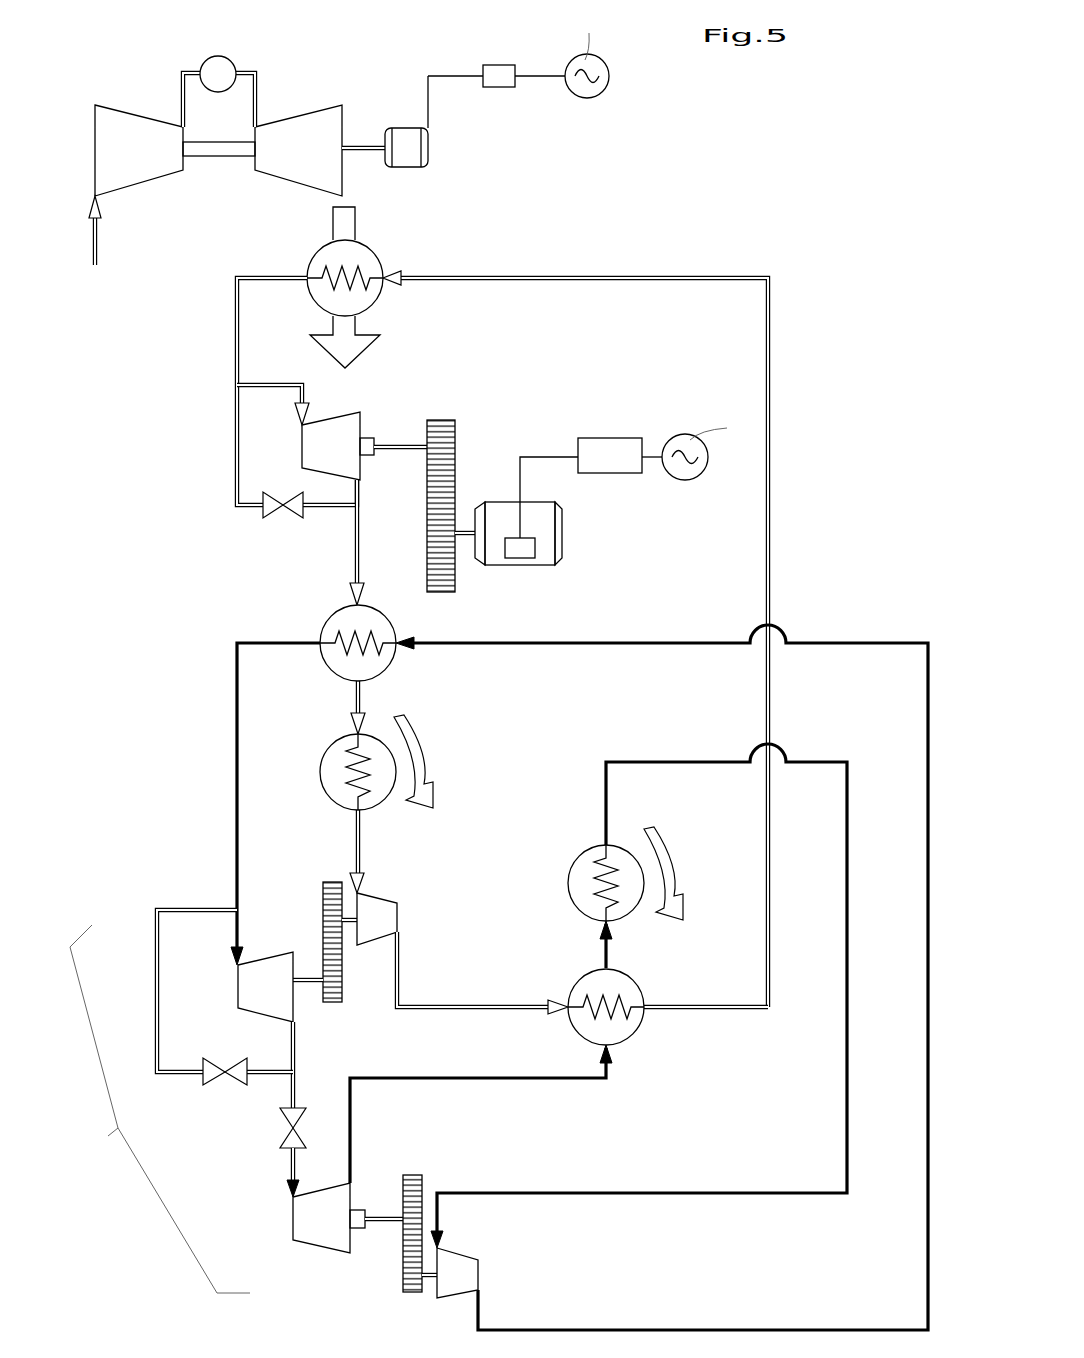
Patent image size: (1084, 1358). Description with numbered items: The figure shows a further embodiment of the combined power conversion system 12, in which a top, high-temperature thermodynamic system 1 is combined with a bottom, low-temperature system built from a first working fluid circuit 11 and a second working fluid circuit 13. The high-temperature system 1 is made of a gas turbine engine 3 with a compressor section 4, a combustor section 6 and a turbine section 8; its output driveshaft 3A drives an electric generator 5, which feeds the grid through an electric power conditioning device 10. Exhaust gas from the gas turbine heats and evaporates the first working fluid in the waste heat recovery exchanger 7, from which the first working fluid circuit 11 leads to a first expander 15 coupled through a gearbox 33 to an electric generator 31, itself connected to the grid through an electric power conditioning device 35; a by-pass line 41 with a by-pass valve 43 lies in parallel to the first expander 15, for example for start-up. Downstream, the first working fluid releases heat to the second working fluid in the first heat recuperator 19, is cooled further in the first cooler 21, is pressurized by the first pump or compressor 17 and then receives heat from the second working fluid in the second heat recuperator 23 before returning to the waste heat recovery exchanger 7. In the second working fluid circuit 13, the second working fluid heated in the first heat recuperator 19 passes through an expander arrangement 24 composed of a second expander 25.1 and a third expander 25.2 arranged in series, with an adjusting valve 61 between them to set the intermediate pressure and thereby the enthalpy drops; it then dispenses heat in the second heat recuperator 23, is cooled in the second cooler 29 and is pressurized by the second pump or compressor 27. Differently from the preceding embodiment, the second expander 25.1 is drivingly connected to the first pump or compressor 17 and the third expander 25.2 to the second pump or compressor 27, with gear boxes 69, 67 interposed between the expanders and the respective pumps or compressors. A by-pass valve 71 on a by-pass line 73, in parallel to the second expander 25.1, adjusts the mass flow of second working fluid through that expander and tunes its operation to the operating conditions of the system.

The top, high-temperature thermodynamic system 1 is at (215, 135).
The gas turbine engine 3 is at (382, 111).
The output driveshaft 3A is at (363, 152).
The compressor section 4 is at (133, 135).
The electric generator 5 is at (405, 137).
The combustor section 6 is at (218, 72).
The waste heat recovery exchanger 7 is at (322, 265).
The turbine section 8 is at (296, 132).
The electric power conditioning device 10 is at (500, 76).
The first working fluid circuit 11 is at (732, 253).
The combined power conversion system 12 is at (518, 98).
The second working fluid circuit 13 is at (160, 740).
The first expander 15 is at (340, 402).
The first pump or compressor 17 is at (380, 915).
The first heat recuperator 19 is at (345, 617).
The first cooler 21 is at (338, 755).
The second heat recuperator 23 is at (617, 985).
The expander arrangement 24 is at (160, 1109).
The second expander 25.1 is at (270, 1005).
The third expander 25.2 is at (315, 1230).
The second pump or compressor 27 is at (460, 1277).
The second cooler 29 is at (585, 866).
The electric generator 31 is at (540, 545).
The gearbox 33 is at (462, 405).
The electric power conditioning device 35 is at (597, 450).
The by-pass line 41 is at (235, 428).
The by-pass valve 43 is at (293, 520).
The adjusting valve 61 is at (283, 1140).
The gear box 67 is at (435, 1166).
The gear box 69 is at (306, 873).
The by-pass valve 71 is at (237, 1087).
The by-pass line 73 is at (157, 978).